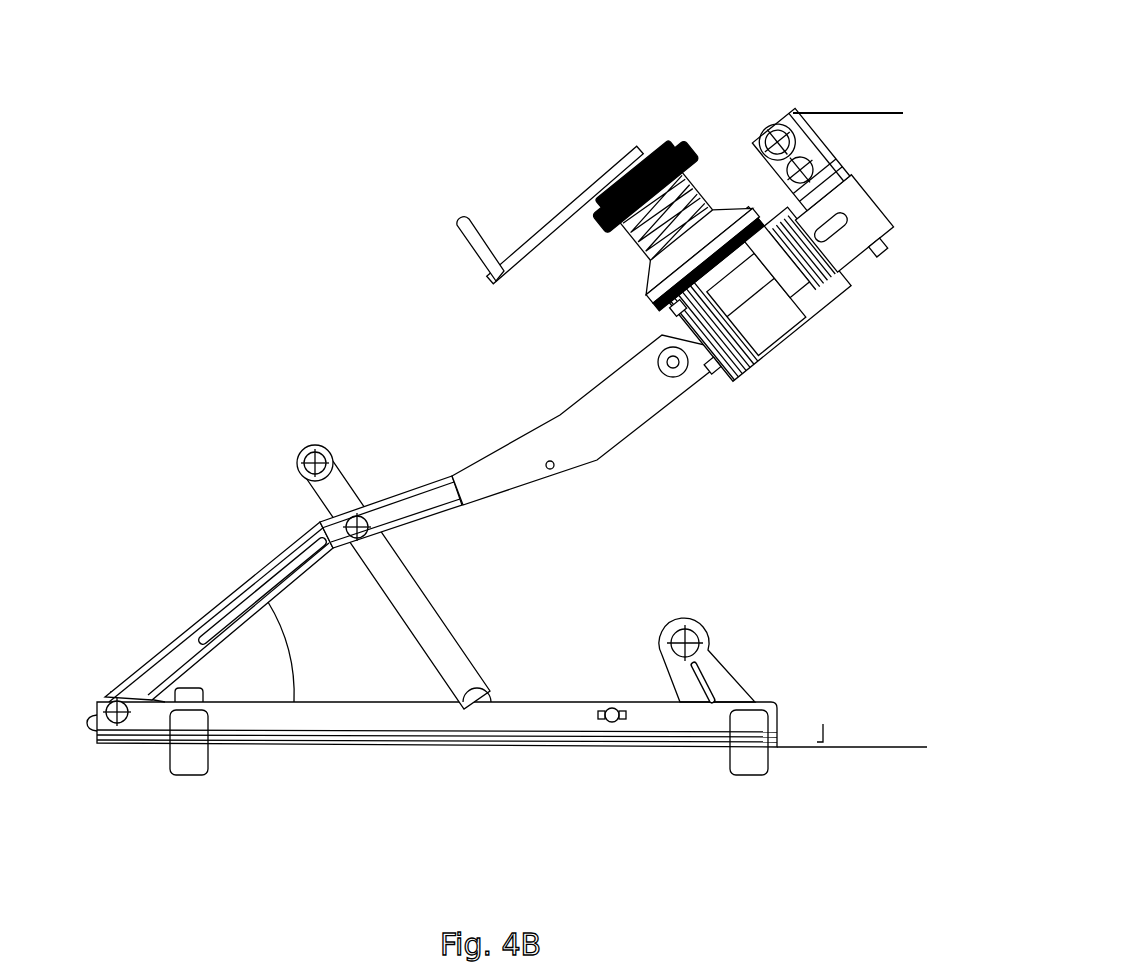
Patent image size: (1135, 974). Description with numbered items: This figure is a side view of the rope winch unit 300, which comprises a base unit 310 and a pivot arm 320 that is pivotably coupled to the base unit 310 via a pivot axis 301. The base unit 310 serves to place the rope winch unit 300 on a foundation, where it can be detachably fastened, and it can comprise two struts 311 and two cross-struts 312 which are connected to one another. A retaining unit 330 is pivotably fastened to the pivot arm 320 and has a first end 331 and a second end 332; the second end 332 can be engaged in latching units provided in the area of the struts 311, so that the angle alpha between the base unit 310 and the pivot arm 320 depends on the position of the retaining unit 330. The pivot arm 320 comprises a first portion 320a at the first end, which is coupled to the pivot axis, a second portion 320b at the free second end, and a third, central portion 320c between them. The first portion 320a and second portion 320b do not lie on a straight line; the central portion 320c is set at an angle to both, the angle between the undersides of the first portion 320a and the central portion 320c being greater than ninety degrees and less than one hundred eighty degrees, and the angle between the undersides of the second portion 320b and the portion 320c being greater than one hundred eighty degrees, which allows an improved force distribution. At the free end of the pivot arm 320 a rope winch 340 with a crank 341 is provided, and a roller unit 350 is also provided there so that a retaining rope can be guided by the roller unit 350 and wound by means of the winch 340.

The rope winch unit 300 is at (297, 298).
The pivot axis 301 is at (108, 705).
The base unit 310 is at (443, 762).
The struts 311 is at (300, 743).
The cross-struts 312 is at (173, 727).
The pivot arm 320 is at (423, 343).
The first portion 320a is at (187, 630).
The second portion 320b is at (825, 320).
The third portion 320c is at (447, 462).
The retaining unit 330 is at (433, 597).
The first end 331 is at (300, 448).
The second end 332 is at (490, 683).
The rope winch 340 is at (633, 162).
The crank 341 is at (522, 243).
The roller unit 350 is at (773, 120).